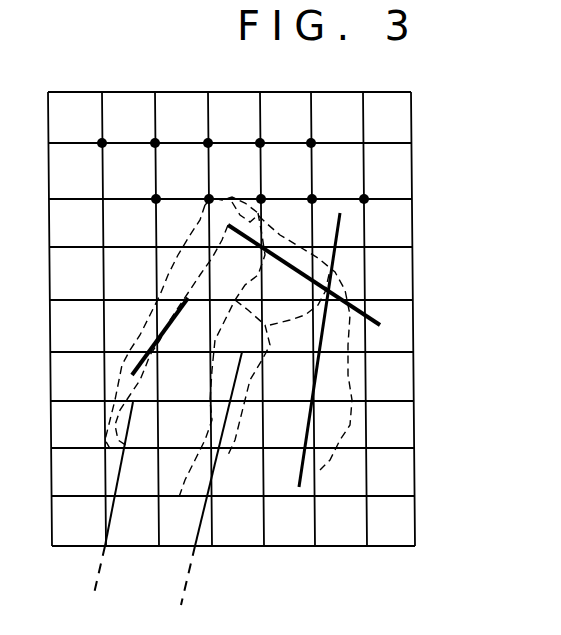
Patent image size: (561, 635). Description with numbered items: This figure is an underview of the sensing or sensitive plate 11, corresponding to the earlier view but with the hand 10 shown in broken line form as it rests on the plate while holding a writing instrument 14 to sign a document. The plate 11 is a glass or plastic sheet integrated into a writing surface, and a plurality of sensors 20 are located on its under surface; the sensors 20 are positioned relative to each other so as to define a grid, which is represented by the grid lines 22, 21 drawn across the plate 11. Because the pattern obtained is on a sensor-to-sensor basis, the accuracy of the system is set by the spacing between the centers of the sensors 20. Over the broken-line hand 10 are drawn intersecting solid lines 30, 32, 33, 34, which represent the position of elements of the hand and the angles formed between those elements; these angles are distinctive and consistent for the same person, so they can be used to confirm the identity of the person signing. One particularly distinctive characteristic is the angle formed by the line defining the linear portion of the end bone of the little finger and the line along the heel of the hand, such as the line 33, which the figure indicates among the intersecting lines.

The hand 10 is at (345, 332).
The sensitive plate 11 is at (413, 262).
The writing instrument 14 is at (200, 212).
The sensors 20 is at (364, 198).
The grid lines 21 is at (205, 125).
The grid lines 22 is at (267, 530).
The line 30 is at (287, 218).
The line 32 is at (307, 433).
The line 33 is at (203, 514).
The line 34 is at (160, 346).